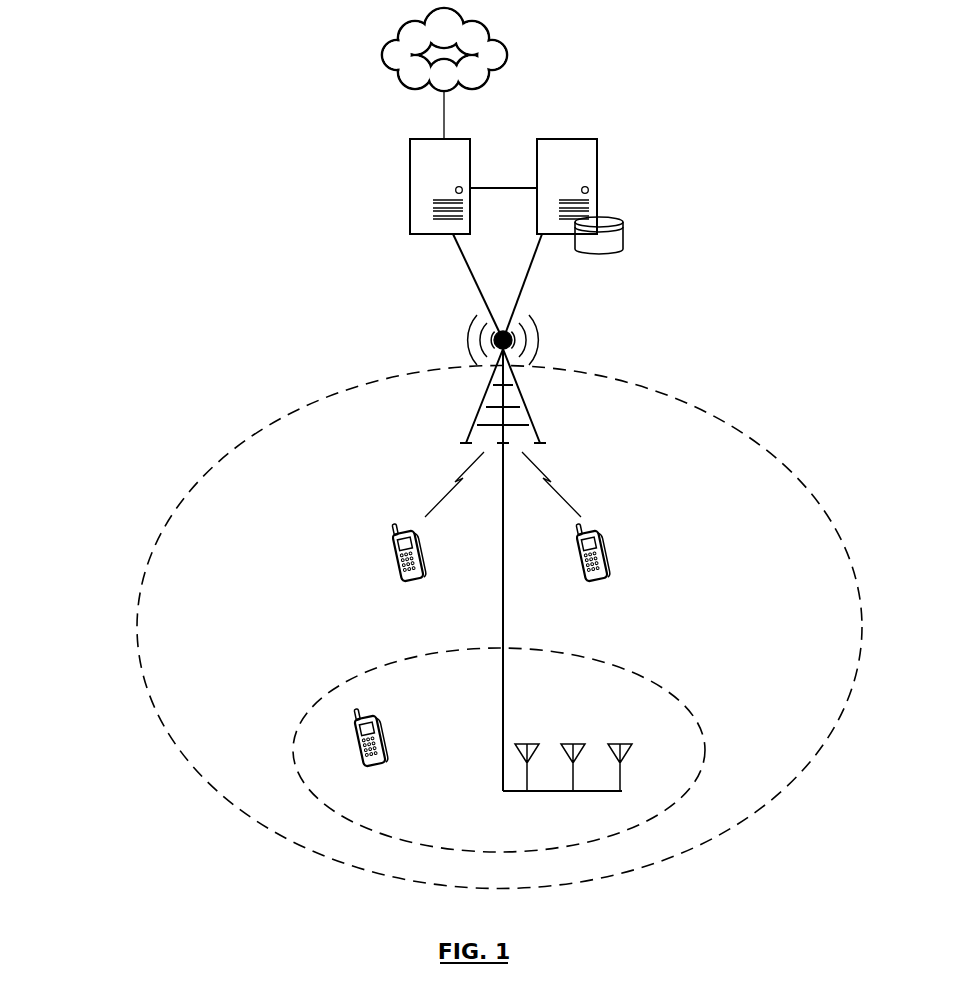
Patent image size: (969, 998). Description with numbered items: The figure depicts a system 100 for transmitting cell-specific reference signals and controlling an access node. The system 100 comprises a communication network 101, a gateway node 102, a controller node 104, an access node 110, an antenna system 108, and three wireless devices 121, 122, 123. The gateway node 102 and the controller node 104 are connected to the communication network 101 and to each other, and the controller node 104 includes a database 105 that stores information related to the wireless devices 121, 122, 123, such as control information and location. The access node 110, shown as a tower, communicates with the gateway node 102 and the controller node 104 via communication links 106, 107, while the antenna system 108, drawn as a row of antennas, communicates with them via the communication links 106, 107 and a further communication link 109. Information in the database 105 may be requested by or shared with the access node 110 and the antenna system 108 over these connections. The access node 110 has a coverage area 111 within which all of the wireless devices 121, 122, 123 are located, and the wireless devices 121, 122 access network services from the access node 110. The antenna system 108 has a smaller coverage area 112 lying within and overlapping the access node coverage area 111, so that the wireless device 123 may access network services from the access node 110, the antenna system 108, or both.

The system 100 is at (553, 75).
The communication network 101 is at (465, 63).
The gateway node 102 is at (410, 157).
The controller node 104 is at (597, 153).
The database 105 is at (623, 218).
The communication link 106 is at (470, 270).
The communication link 107 is at (533, 270).
The antenna system 108 is at (622, 791).
The communication link 109 is at (503, 632).
The access node 110 is at (477, 425).
The coverage area 111 is at (157, 538).
The coverage area 112 is at (642, 678).
The wireless device 121 is at (423, 568).
The wireless device 122 is at (608, 556).
The wireless device 123 is at (387, 741).